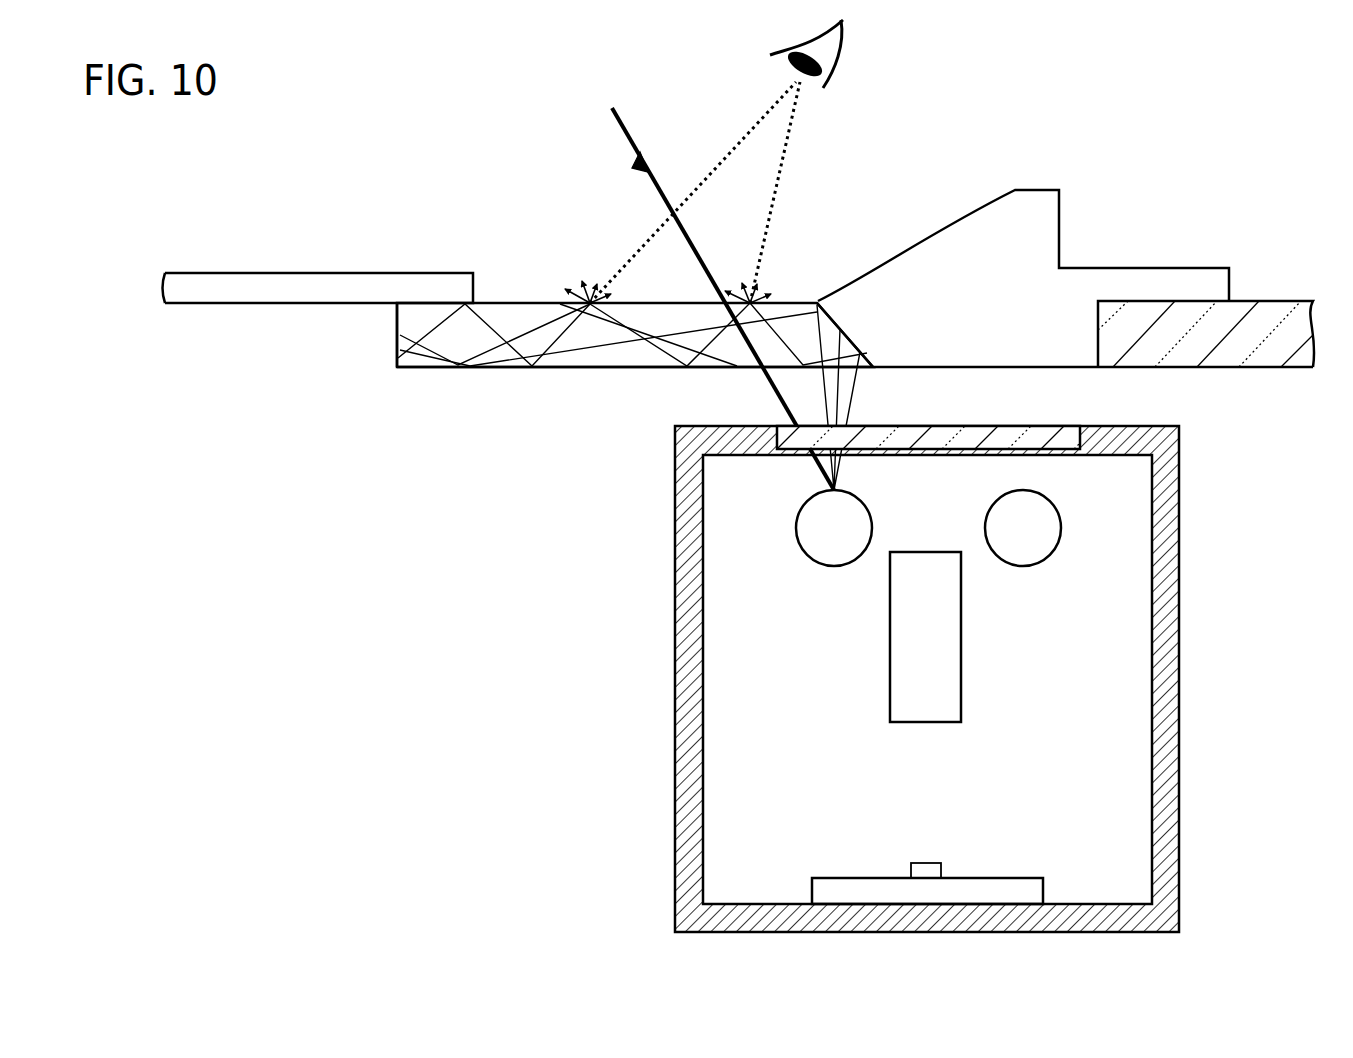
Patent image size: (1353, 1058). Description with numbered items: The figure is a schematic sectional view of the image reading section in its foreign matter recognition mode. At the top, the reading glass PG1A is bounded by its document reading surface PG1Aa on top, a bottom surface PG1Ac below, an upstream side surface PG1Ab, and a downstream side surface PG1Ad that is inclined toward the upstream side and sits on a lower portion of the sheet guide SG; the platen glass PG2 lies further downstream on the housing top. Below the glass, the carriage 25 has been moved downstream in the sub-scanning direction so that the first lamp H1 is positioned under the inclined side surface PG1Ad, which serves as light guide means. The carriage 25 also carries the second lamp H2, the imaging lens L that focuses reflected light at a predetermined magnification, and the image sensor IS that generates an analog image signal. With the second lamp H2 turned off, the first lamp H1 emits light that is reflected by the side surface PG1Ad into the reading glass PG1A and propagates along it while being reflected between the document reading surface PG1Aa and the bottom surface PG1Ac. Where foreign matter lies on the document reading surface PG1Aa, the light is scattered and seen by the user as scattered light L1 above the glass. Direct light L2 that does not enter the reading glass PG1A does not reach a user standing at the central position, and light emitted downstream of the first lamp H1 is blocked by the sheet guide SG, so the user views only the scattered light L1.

The reading glass PG1A is at (513, 312).
The document reading surface PG1Aa is at (667, 308).
The side surface PG1Ab is at (397, 335).
The bottom surface PG1Ac is at (574, 368).
The side surface PG1Ad is at (820, 318).
The platen glass PG2 is at (1238, 312).
The sheet guide SG is at (1038, 203).
The scattered light L1 is at (704, 192).
The direct light L2 is at (715, 299).
The carriage 25 is at (1188, 524).
The first lamp H1 is at (826, 540).
The second lamp H2 is at (1030, 540).
The imaging lens L is at (916, 628).
The image sensor IS is at (935, 870).